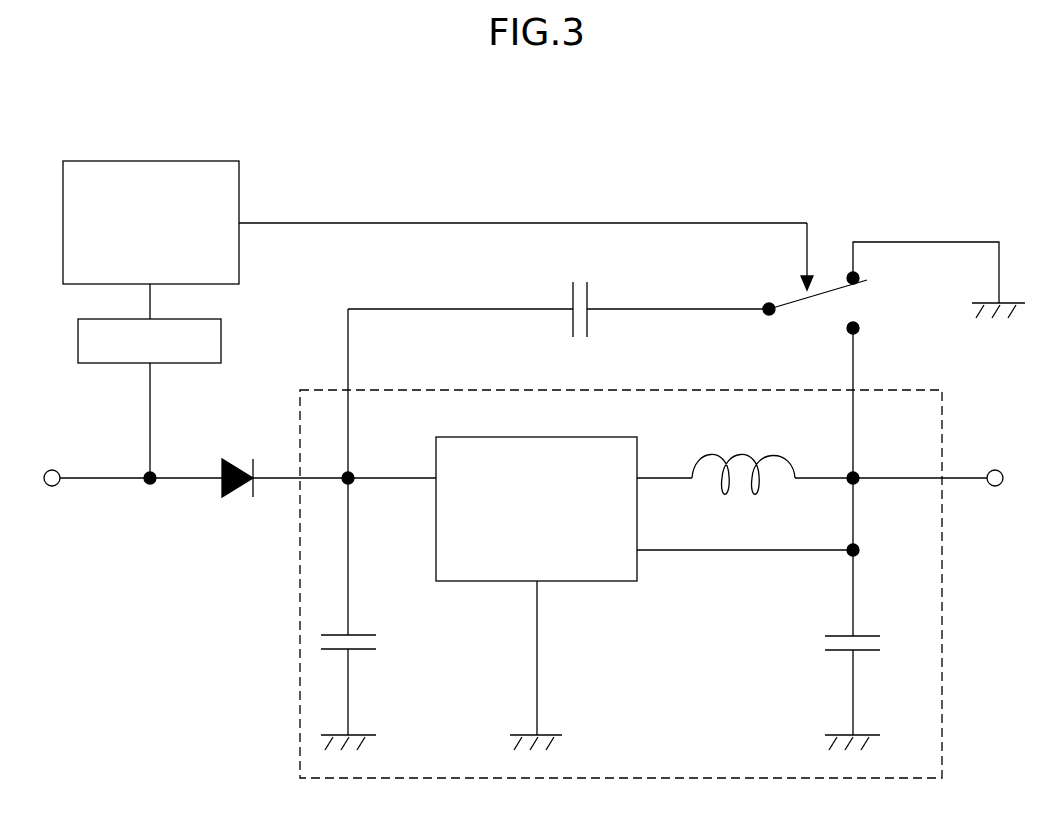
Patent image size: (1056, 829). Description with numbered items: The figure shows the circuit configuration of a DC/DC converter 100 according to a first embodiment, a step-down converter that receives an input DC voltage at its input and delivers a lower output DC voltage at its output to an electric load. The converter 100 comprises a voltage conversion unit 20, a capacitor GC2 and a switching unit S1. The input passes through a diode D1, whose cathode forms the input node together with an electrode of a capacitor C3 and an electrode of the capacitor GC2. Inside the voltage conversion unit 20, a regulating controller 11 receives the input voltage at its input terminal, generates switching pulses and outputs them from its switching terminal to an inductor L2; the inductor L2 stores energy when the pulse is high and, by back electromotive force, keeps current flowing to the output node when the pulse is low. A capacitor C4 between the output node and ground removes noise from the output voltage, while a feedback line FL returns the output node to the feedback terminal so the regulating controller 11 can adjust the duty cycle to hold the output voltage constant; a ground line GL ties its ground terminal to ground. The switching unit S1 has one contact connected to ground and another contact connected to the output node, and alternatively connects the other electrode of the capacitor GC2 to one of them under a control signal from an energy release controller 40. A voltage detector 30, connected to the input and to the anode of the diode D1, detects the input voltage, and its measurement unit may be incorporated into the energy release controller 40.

The DC/DC converter 100 is at (132, 80).
The energy release controller 40 is at (166, 161).
The voltage detector 30 is at (221, 340).
The regulating controller 11 is at (548, 437).
The voltage conversion unit 20 is at (944, 693).
The diode D1 is at (237, 461).
The capacitor GC2 is at (558, 380).
The switching unit S1 is at (815, 306).
The inductor L2 is at (743, 460).
The feedback line FL is at (740, 552).
The ground line GL is at (537, 672).
The capacitor C3 is at (367, 614).
The capacitor C4 is at (870, 692).